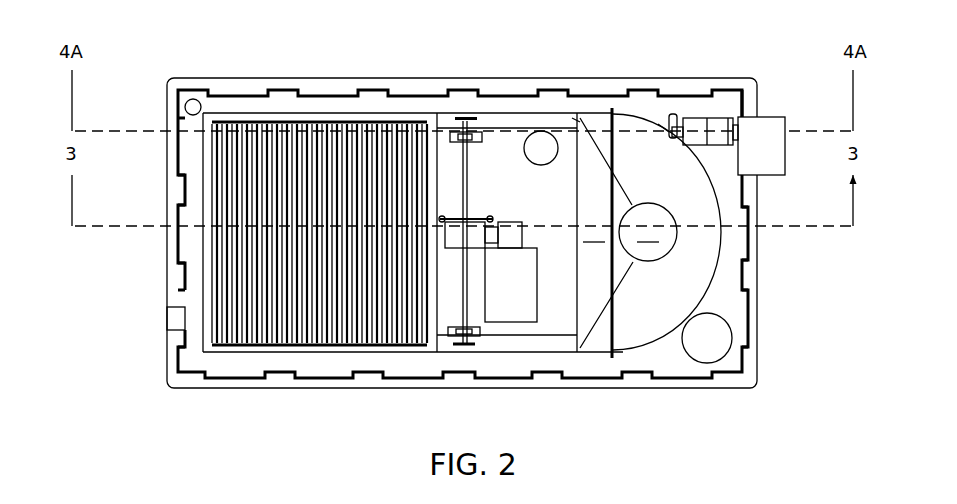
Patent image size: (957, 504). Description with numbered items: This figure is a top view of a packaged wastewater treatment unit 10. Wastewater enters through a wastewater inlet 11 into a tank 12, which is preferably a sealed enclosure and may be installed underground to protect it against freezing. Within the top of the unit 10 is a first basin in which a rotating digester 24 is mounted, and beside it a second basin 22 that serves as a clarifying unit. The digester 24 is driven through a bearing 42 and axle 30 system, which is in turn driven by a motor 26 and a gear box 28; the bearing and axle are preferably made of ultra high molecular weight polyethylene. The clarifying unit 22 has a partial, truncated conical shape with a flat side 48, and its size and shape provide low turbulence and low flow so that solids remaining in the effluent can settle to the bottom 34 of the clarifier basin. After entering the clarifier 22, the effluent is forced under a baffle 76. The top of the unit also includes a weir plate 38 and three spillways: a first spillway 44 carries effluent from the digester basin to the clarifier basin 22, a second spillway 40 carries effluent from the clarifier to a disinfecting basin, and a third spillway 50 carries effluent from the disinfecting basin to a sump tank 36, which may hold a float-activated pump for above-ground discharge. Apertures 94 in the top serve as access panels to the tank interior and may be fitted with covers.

The packaged unit 10 is at (153, 215).
The wastewater inlet 11 is at (178, 313).
The tank 12 is at (227, 393).
The second basin 22 is at (650, 173).
The rotating digester 24 is at (210, 167).
The motor 26 is at (510, 288).
The gear box 28 is at (470, 255).
The axle 30 is at (467, 237).
The bottom of the clarifier basin 34 is at (648, 232).
The sump tank 36 is at (787, 148).
The weir plate 38 is at (673, 115).
The second spillway 40 is at (667, 113).
The bearing 42 is at (458, 117).
The first spillway 44 is at (492, 118).
The flat side 48 is at (591, 232).
The third spillway 50 is at (740, 117).
The baffle 76 is at (612, 333).
The apertures 94 is at (193, 99).